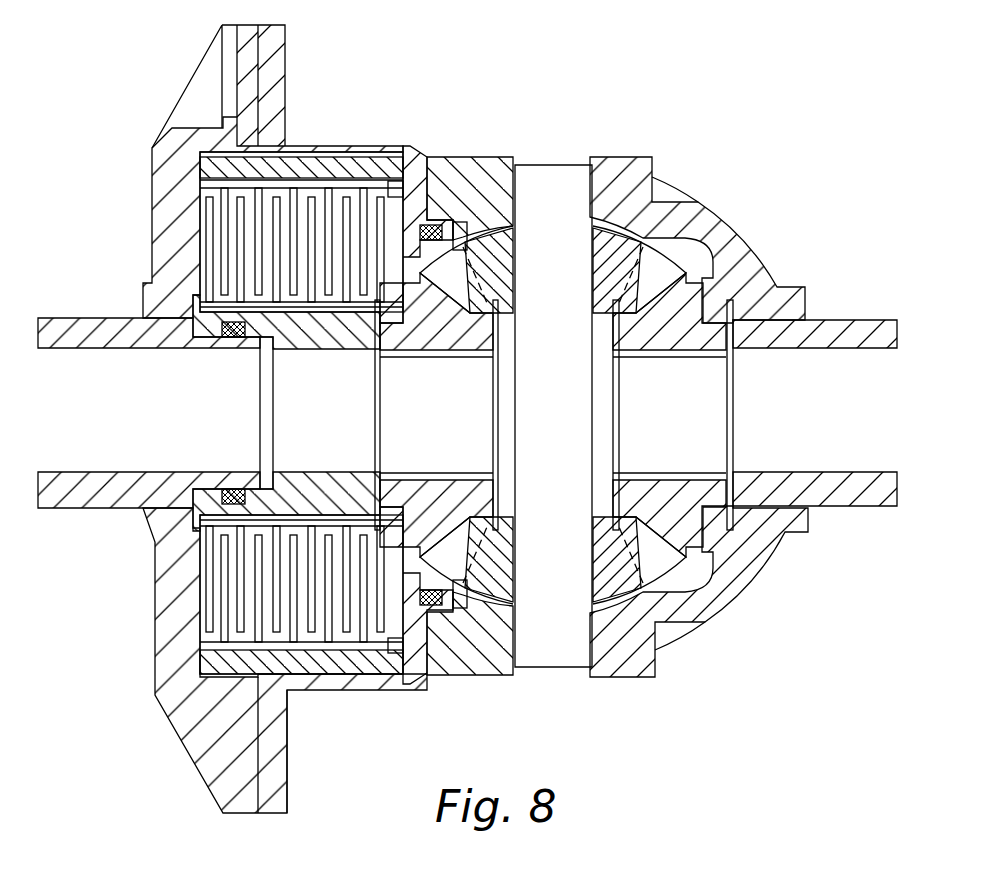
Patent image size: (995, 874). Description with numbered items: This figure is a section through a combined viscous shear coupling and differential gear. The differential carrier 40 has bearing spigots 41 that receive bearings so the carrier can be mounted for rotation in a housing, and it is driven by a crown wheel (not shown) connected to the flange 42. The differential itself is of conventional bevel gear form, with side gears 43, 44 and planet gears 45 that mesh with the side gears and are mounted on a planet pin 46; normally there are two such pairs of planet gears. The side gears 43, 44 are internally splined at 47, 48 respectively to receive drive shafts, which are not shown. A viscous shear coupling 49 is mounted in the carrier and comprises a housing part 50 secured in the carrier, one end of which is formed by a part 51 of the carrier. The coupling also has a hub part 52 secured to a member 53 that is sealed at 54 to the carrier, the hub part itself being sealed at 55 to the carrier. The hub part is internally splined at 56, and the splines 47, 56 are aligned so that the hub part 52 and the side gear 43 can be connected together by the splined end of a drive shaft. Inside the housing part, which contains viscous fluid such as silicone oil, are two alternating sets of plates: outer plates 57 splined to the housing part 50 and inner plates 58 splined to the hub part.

The differential carrier 40 is at (640, 160).
The bearing spigots 41 is at (82, 495).
The flange 42 is at (287, 63).
The side gear 43 is at (463, 497).
The side gear 44 is at (657, 325).
The planet gears 45 is at (505, 280).
The planet pin 46 is at (567, 650).
The internal splines 47 is at (443, 353).
The internal splines 48 is at (672, 350).
The viscous shear coupling 49 is at (385, 160).
The housing part 50 is at (352, 146).
The part of the carrier 51 is at (165, 226).
The hub part 52 is at (267, 368).
The member 53 is at (395, 212).
The seal 54 is at (437, 225).
The seal 55 is at (233, 338).
The internal splines 56 is at (297, 333).
The outer plates 57 is at (207, 195).
The inner plates 58 is at (160, 283).